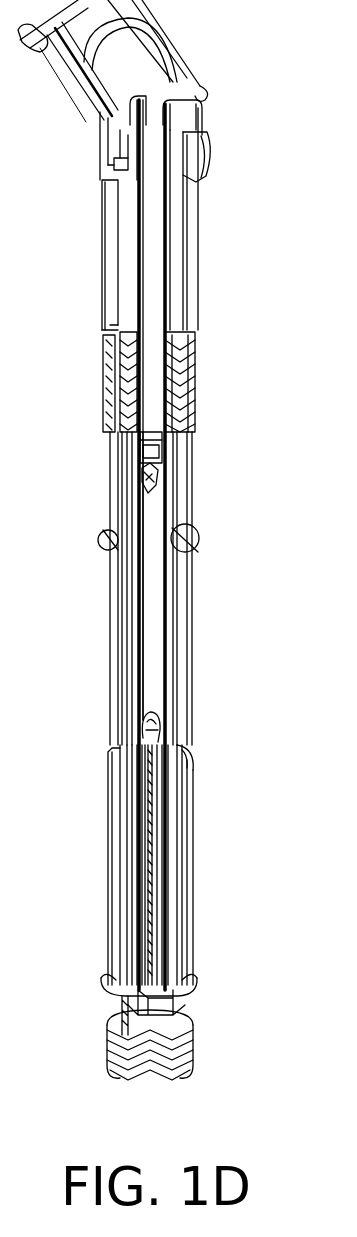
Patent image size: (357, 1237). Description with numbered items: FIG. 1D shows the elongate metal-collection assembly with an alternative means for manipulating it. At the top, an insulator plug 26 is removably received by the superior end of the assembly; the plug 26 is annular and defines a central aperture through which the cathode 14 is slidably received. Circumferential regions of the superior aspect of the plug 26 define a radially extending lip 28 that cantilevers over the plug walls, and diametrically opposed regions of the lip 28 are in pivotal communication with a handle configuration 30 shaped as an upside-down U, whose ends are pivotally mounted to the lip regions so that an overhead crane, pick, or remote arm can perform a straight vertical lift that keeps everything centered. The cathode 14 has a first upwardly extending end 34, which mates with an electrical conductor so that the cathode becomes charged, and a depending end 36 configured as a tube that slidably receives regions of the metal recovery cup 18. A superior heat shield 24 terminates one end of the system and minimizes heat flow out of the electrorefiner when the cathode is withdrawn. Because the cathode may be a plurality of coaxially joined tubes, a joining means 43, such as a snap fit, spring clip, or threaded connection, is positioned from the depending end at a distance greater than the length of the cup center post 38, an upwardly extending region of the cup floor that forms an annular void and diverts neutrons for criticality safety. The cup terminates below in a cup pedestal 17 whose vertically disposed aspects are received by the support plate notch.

The handle configuration 30 is at (115, 15).
The first upwardly extending end 34 is at (152, 105).
The radially extending lip 28 is at (203, 170).
The insulator plug 26 is at (108, 250).
The cathode 14 is at (152, 325).
The depending end 36 is at (148, 383).
The superior heat shield 24 is at (197, 413).
The joining means 43 is at (155, 452).
The upwardly extending region 38 is at (150, 728).
The metal recovery cup 18 is at (177, 947).
The cup pedestal 17 is at (170, 1017).